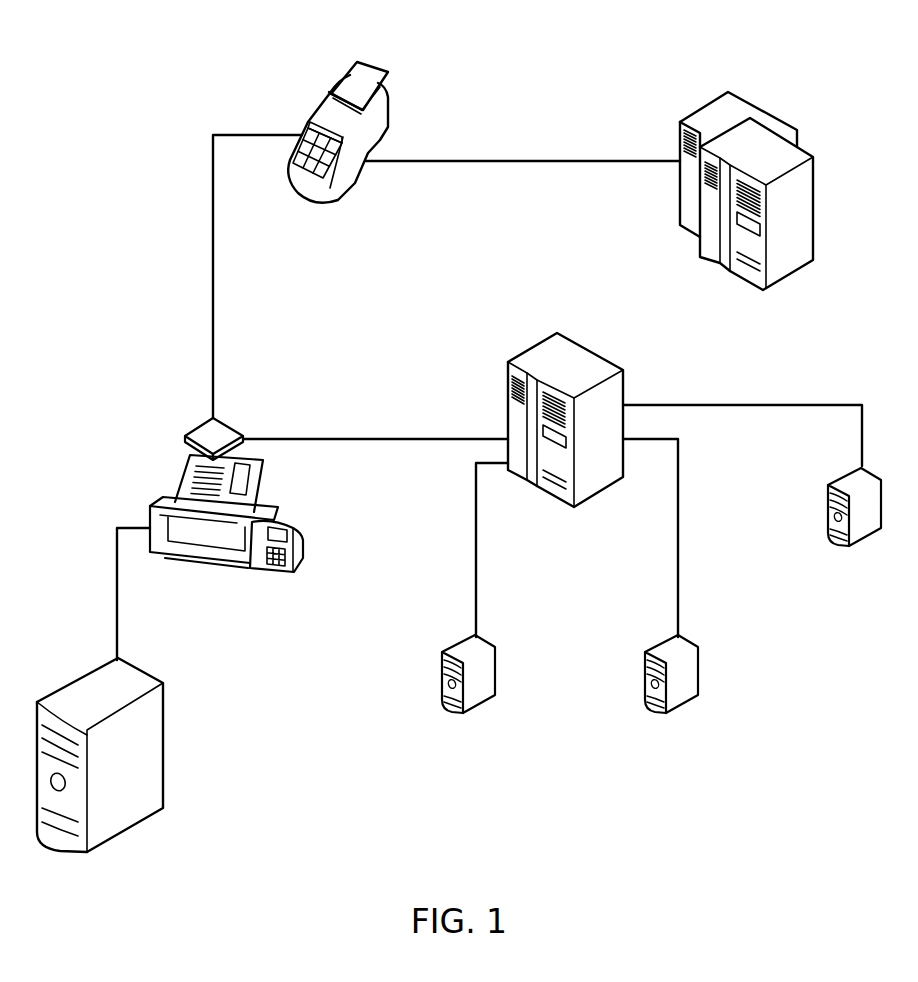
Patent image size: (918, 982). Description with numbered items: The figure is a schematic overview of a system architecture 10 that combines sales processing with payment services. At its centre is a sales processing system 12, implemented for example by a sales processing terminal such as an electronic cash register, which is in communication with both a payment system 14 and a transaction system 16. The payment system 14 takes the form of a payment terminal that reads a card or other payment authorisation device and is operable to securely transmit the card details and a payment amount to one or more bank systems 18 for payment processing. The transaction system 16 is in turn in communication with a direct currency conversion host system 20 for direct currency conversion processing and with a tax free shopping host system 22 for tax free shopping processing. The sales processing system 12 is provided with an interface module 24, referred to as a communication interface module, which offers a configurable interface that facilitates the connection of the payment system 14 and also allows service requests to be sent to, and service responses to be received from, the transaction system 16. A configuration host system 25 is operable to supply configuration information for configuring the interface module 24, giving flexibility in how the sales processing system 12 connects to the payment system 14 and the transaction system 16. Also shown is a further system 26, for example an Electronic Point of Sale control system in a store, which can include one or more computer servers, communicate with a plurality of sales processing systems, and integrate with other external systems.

The system architecture 10 is at (388, 842).
The sales processing system 12 is at (246, 570).
The payment system 14 is at (358, 60).
The transaction system 16 is at (555, 332).
The bank system 18 is at (727, 92).
The direct currency conversion host system 20 is at (463, 714).
The tax free shopping host system 22 is at (666, 714).
The interface module 24 is at (228, 426).
The configuration host system 25 is at (849, 547).
The EPOS control system 26 is at (165, 746).